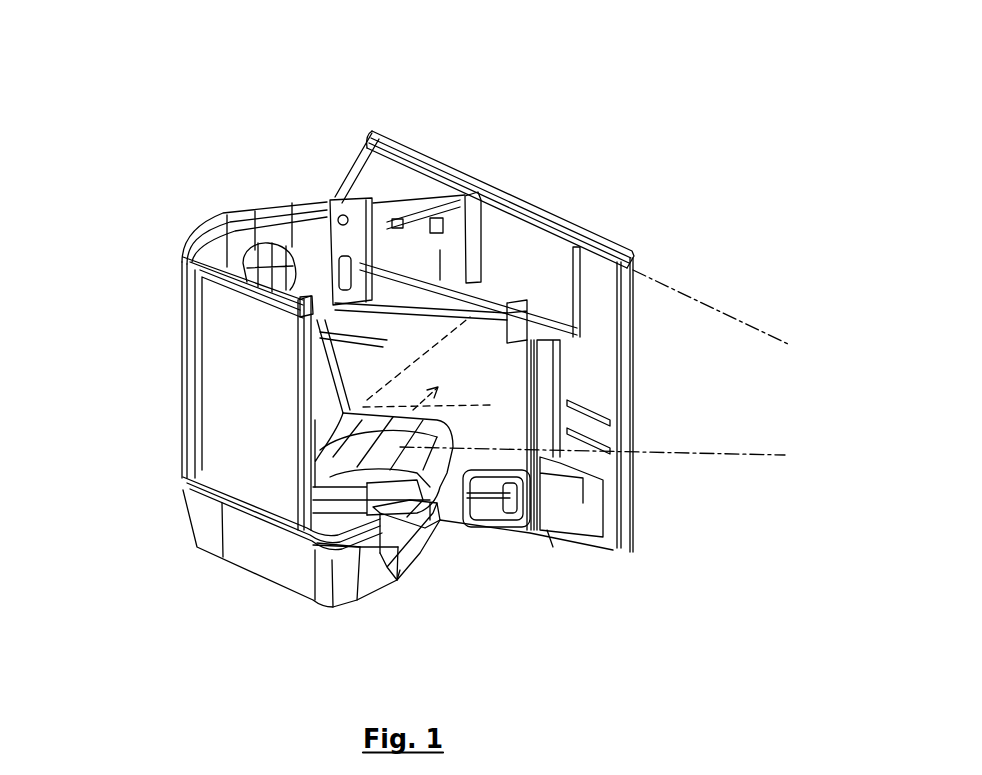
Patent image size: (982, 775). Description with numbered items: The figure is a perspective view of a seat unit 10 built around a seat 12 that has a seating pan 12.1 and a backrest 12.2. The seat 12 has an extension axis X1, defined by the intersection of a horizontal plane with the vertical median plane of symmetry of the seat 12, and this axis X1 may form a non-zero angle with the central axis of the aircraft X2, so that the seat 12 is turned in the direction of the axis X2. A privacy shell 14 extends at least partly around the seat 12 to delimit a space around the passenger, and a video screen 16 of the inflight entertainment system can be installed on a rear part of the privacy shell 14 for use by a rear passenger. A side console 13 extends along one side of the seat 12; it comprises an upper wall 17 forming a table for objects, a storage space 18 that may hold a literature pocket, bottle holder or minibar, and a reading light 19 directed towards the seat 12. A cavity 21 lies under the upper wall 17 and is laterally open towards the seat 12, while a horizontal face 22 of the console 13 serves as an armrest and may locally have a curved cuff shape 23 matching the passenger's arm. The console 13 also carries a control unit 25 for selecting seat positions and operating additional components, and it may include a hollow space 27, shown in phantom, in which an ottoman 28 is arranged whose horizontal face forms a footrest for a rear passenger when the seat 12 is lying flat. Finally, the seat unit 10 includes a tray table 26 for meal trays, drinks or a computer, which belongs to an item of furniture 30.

The seat unit 10 is at (263, 92).
The seat 12 is at (310, 430).
The seating pan 12.1 is at (367, 517).
The backrest 12.2 is at (205, 258).
The side console 13 is at (493, 218).
The privacy shell 14 is at (195, 225).
The video screen 16 is at (344, 167).
The upper wall 17 is at (450, 287).
The storage space 18 is at (417, 215).
The reading light 19 is at (343, 216).
The cavity 21 is at (470, 333).
The horizontal face 22 is at (420, 337).
The curved cuff shape 23 is at (367, 237).
The control unit 25 is at (545, 295).
The tray table 26 is at (483, 367).
The hollow space 27 is at (305, 467).
The ottoman 28 is at (405, 435).
The item of furniture 30 is at (312, 358).
The extension axis X1 is at (710, 455).
The central axis of the aircraft X2 is at (743, 323).